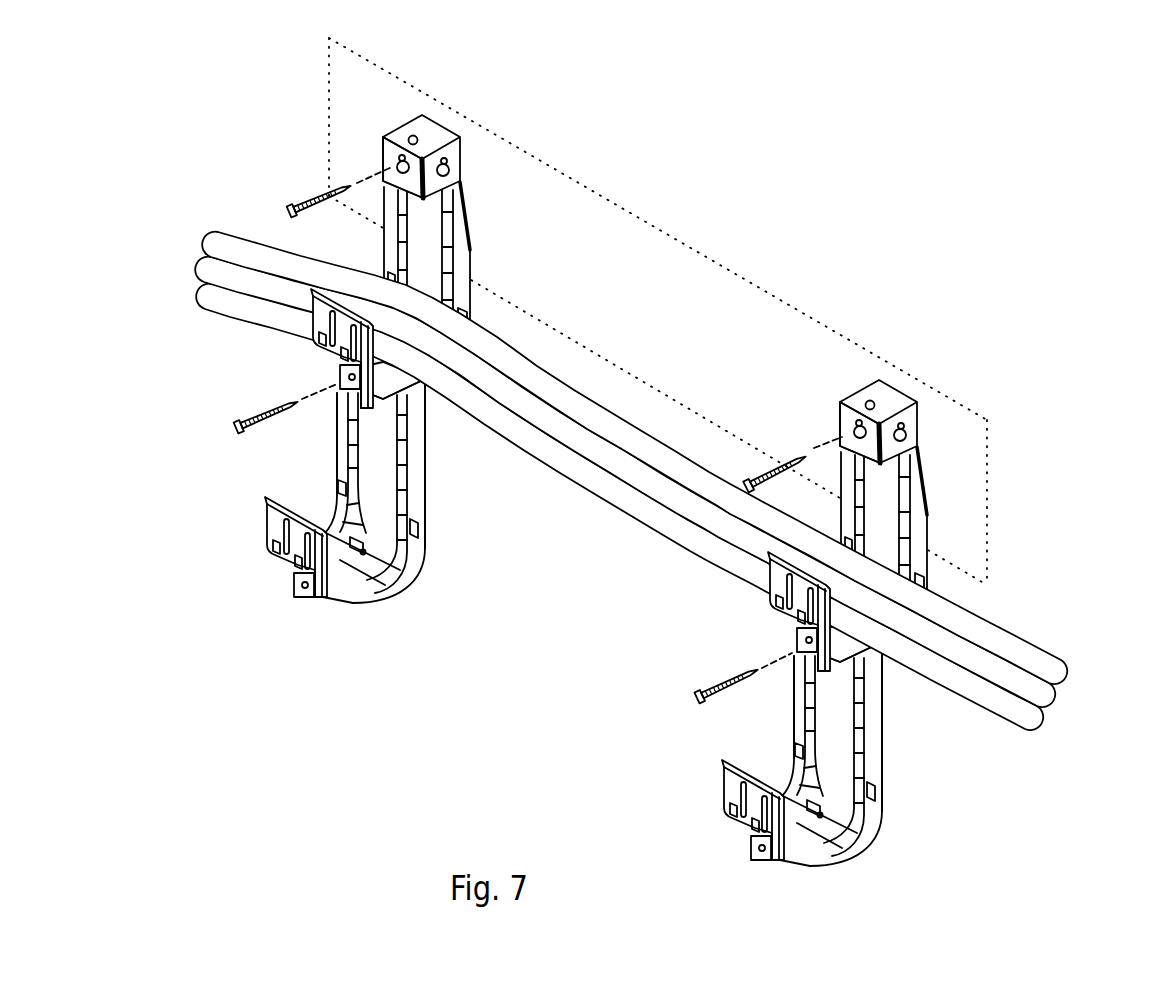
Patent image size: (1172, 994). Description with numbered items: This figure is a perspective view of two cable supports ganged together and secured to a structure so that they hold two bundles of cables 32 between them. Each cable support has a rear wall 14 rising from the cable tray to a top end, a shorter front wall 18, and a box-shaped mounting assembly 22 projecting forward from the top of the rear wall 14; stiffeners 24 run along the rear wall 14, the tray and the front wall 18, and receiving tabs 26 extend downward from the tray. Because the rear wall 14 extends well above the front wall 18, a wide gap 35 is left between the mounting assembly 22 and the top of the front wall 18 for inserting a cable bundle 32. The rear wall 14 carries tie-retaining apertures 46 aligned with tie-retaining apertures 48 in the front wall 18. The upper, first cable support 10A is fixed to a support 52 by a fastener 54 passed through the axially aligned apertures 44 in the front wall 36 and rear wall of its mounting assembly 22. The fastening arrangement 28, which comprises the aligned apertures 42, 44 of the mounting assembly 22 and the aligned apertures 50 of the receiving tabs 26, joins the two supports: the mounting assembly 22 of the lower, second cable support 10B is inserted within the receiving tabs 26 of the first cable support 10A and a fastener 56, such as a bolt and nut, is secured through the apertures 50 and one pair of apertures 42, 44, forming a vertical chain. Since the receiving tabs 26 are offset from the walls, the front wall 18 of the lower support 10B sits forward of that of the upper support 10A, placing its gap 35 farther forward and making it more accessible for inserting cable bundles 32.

The first cable support 10A is at (472, 252).
The second cable support 10B is at (427, 470).
The rear wall 14 is at (389, 465).
The front wall 18 is at (278, 519).
The box-shaped mounting assembly 22 is at (438, 119).
The stiffeners 24 is at (426, 478).
The receiving tabs 26 is at (311, 598).
The fastening arrangement 28 is at (365, 155).
The cable bundle 32 is at (1032, 662).
The gap 35 is at (302, 488).
The front wall of the box-shaped mounting assembly 36 is at (388, 152).
The apertures in side walls 42 is at (448, 165).
The apertures in front and rear walls 44 is at (407, 165).
The tie-retaining apertures in rear wall 46 is at (423, 528).
The tie-retaining apertures in front wall 48 is at (735, 798).
The apertures in receiving tabs 50 is at (305, 598).
The support 52 is at (655, 250).
The fastener 54 is at (289, 208).
The fastener 56 is at (240, 420).